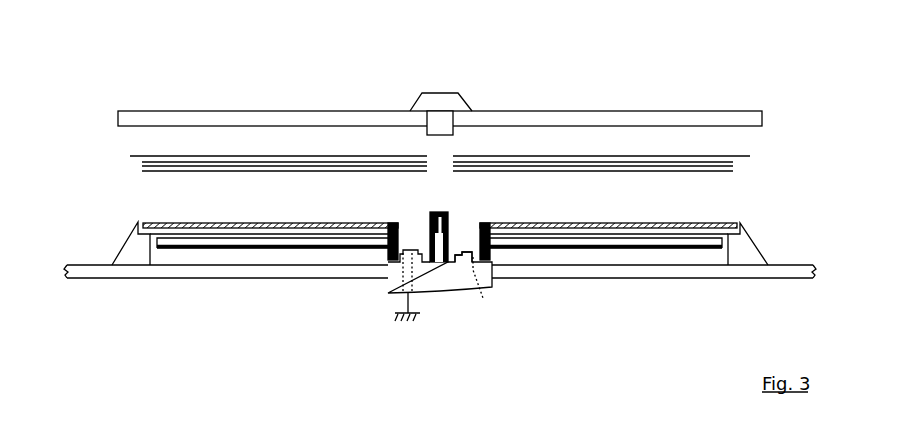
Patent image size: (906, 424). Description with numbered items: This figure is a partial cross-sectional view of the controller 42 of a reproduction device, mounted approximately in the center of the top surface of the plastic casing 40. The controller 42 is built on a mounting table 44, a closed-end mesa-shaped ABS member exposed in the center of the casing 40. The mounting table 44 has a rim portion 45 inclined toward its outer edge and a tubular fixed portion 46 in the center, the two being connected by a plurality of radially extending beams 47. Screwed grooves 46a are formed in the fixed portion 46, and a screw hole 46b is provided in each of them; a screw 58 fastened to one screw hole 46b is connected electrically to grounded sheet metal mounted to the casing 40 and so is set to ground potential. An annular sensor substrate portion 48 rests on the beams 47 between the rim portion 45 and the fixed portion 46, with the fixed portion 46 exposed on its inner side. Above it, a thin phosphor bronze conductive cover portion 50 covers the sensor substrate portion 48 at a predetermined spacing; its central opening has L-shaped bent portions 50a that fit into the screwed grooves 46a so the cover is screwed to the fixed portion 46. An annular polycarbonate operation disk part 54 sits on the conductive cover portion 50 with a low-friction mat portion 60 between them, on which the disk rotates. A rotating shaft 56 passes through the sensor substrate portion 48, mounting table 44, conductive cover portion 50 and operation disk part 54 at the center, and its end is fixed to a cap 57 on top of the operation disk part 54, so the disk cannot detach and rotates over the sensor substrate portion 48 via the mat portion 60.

The casing 40 is at (803, 270).
The controller 42 is at (440, 73).
The mounting table 44 is at (406, 263).
The rim portion 45 is at (137, 246).
The fixed portion 46 is at (471, 269).
The screwed grooves 46a is at (407, 252).
The screw hole 46b is at (495, 286).
The beams 47 is at (238, 256).
The sensor substrate portion 48 is at (347, 249).
The conductive cover portion 50 is at (341, 224).
The bent portions 50a is at (497, 255).
The operation disk part 54 is at (314, 121).
The rotating shaft 56 is at (446, 214).
The cap 57 is at (424, 108).
The screw 58 is at (457, 221).
The mat portion 60 is at (768, 175).